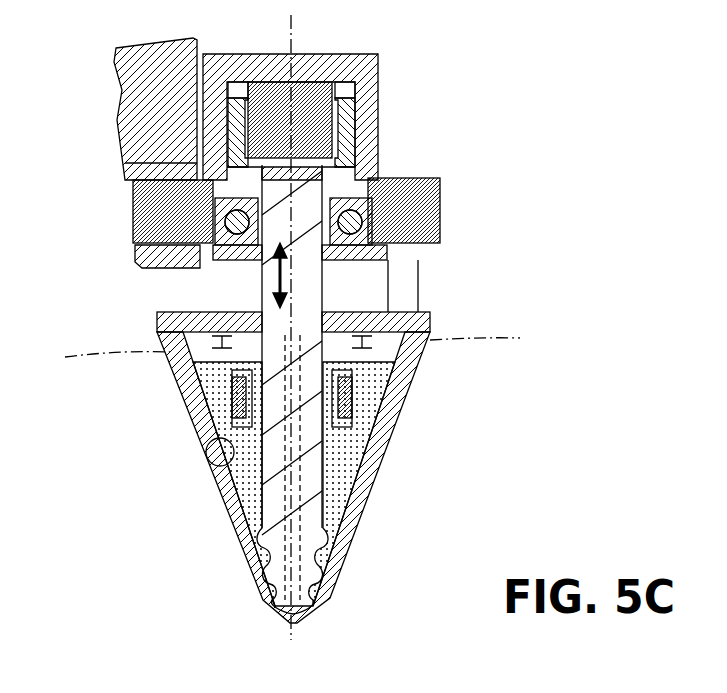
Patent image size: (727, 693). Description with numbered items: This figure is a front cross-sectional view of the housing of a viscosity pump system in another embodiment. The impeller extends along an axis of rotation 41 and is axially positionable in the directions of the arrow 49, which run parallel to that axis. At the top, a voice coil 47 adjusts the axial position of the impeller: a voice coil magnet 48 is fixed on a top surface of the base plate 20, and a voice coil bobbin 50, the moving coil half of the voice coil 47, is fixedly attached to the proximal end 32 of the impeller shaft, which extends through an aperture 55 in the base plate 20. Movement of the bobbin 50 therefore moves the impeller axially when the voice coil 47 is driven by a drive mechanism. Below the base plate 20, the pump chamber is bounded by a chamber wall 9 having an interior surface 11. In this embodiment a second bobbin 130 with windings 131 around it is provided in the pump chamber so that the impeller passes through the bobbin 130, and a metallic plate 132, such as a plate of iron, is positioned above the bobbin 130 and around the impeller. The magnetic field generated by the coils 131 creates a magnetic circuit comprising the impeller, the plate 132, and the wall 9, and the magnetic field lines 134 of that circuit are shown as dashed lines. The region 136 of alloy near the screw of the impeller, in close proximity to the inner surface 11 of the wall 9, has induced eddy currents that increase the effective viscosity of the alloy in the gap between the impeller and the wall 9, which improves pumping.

The axis of rotation 41 is at (297, 27).
The voice coil 47 is at (414, 117).
The voice coil magnet 48 is at (307, 87).
The voice coil bobbin 50 is at (350, 133).
The aperture 55 is at (130, 163).
The proximal end 32 is at (325, 187).
The base plate 20 is at (405, 220).
The arrow 49 is at (262, 277).
The metallic plate 132 is at (188, 305).
The magnetic field lines 134 is at (297, 354).
The second bobbin 130 is at (358, 401).
The windings 131 is at (340, 420).
The interior surface 11 is at (205, 447).
The chamber wall 9 is at (210, 470).
The region of alloy 136 is at (262, 600).